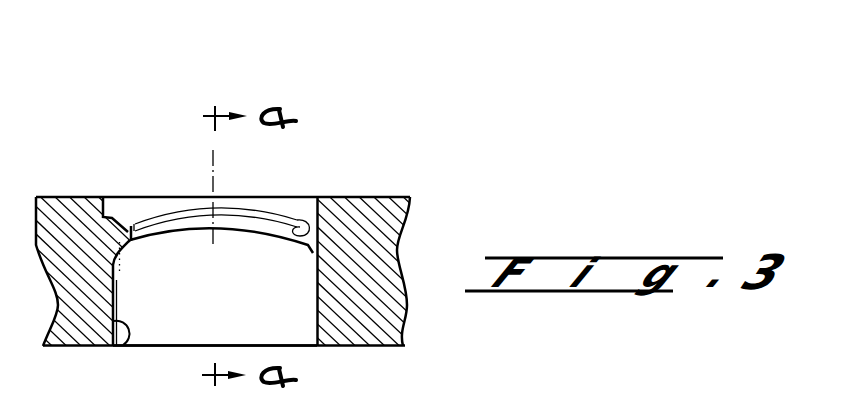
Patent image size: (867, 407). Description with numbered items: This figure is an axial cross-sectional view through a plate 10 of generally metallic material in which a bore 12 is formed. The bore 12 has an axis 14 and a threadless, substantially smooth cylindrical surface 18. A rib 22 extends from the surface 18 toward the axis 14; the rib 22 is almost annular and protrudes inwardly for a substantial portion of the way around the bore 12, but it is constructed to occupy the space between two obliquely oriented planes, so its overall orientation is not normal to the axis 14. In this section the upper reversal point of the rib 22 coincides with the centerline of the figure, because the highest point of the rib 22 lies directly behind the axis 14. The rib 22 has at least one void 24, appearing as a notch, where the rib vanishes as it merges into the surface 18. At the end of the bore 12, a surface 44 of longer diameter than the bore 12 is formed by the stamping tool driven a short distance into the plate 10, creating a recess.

The plate 10 is at (393, 203).
The bore 12 is at (183, 289).
The axis 14 is at (208, 168).
The cylindrical surface 18 is at (122, 347).
The rib 22 is at (255, 203).
The void 24 is at (300, 223).
The surface 44 is at (105, 210).